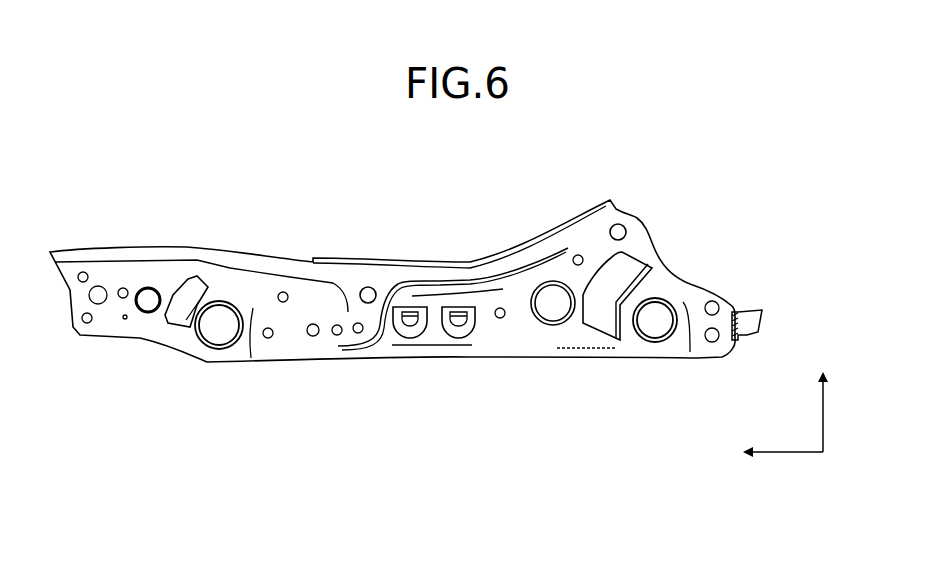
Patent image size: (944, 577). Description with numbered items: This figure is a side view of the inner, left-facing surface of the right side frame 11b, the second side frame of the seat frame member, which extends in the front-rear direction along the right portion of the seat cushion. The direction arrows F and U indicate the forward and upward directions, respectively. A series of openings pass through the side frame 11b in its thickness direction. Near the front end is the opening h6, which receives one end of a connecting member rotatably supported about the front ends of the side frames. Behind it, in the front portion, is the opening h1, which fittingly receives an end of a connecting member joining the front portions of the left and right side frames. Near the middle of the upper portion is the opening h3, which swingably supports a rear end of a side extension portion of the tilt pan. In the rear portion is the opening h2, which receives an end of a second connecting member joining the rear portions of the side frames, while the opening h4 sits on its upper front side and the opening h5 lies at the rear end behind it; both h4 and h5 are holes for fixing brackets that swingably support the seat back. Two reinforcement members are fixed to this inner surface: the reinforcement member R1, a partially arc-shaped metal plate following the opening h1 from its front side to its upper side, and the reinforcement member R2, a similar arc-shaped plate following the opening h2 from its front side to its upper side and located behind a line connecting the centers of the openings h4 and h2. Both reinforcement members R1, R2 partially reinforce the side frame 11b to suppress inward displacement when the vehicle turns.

The opening h6 is at (147, 288).
The reinforcement member R1 is at (192, 279).
The opening h1 is at (221, 302).
The opening h3 is at (368, 287).
The right side frame 11b is at (447, 259).
The reinforcement member R2 is at (613, 262).
The opening h4 is at (626, 231).
The opening h2 is at (667, 298).
The opening h5 is at (737, 310).
The forward direction F is at (783, 451).
The upward direction U is at (826, 415).